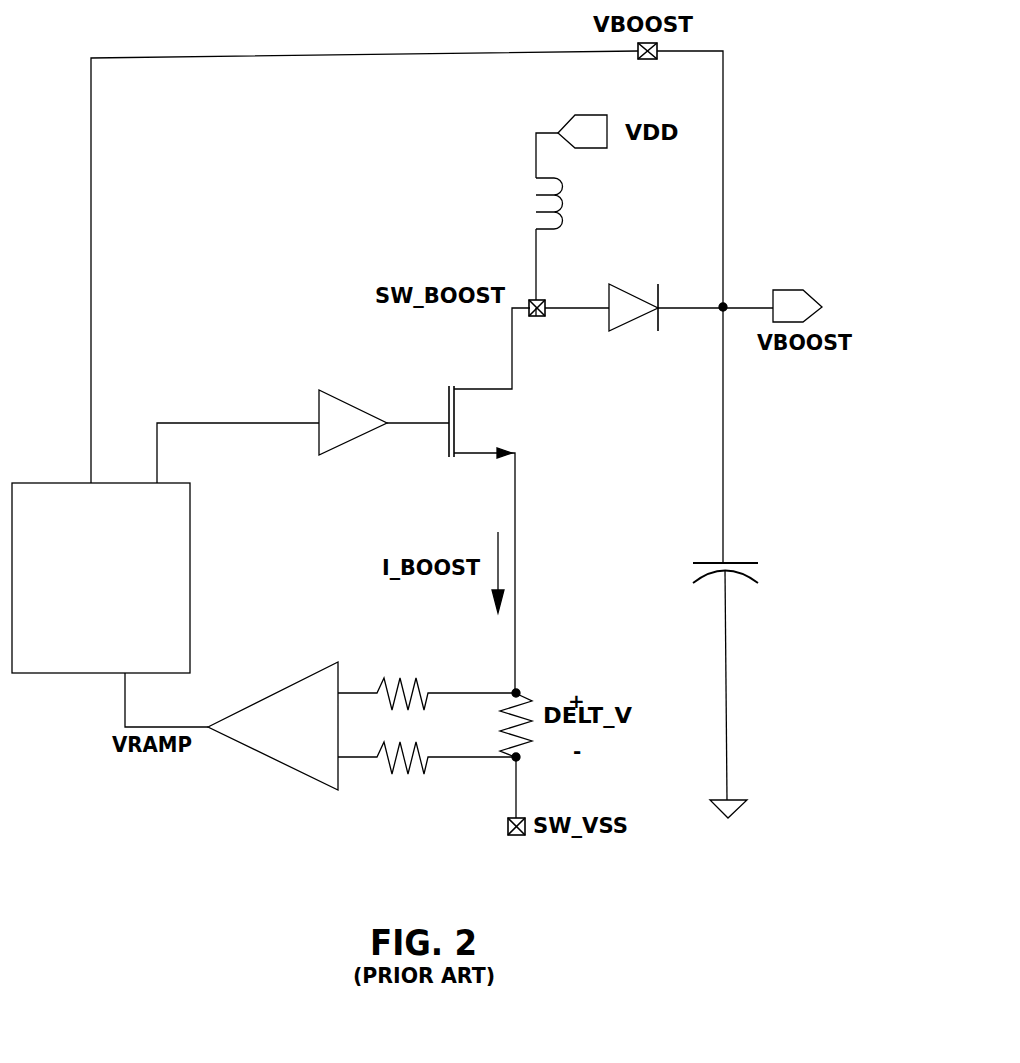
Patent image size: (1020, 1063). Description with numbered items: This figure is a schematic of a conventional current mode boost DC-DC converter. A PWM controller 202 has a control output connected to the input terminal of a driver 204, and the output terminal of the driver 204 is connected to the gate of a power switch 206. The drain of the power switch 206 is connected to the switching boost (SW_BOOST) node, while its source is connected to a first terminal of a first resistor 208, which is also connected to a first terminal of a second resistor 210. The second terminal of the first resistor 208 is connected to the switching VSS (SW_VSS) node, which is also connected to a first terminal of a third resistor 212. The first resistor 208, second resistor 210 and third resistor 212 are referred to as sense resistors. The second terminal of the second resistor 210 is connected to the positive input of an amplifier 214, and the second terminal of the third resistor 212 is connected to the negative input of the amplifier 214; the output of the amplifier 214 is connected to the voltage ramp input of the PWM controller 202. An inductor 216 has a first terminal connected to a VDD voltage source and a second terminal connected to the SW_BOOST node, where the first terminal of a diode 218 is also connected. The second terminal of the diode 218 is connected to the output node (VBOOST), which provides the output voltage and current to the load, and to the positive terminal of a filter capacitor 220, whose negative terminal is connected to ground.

The PWM controller 202 is at (117, 627).
The driver 204 is at (340, 462).
The power switch 206 is at (447, 374).
The first resistor 208 is at (542, 682).
The second resistor 210 is at (412, 664).
The third resistor 212 is at (412, 782).
The amplifier 214 is at (287, 768).
The inductor 216 is at (522, 201).
The diode 218 is at (635, 338).
The filter capacitor 220 is at (768, 548).